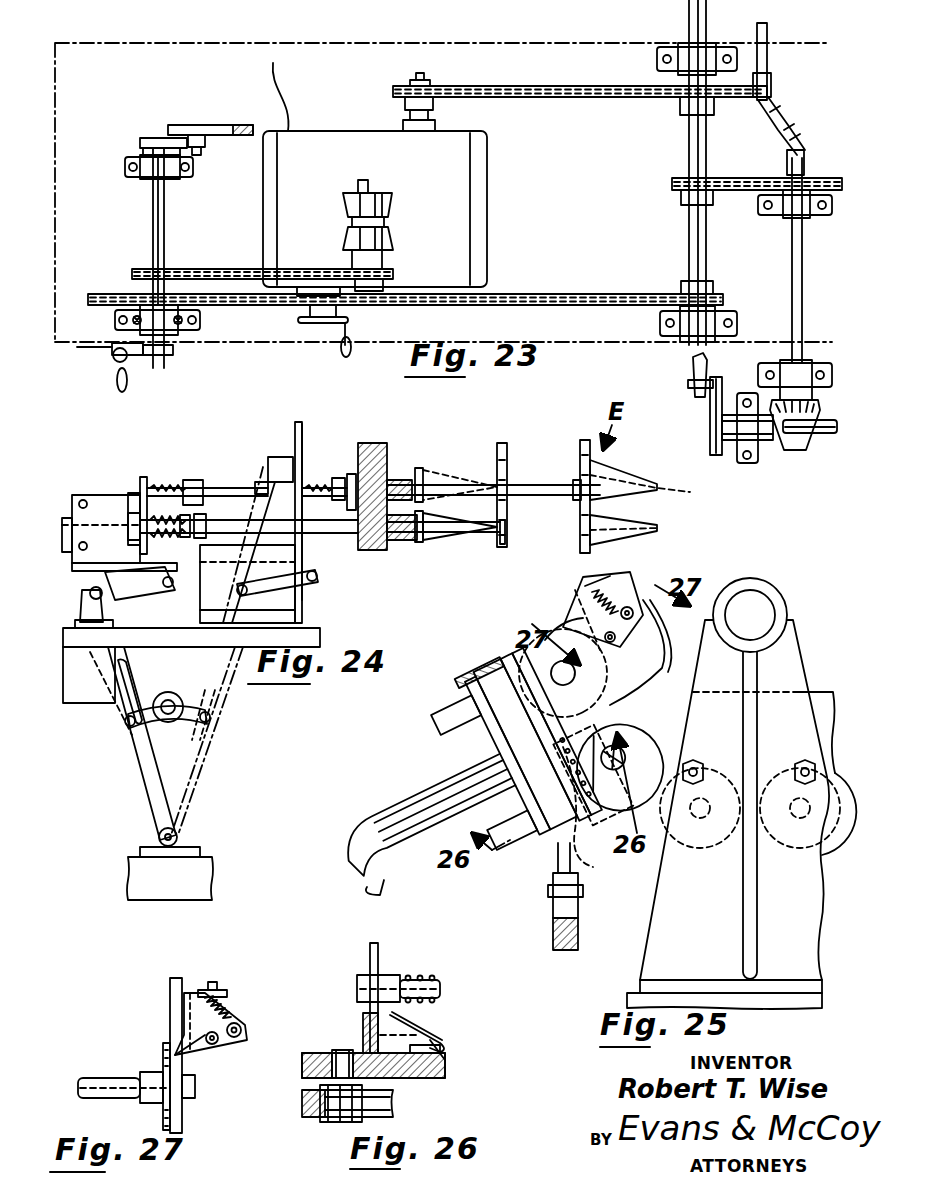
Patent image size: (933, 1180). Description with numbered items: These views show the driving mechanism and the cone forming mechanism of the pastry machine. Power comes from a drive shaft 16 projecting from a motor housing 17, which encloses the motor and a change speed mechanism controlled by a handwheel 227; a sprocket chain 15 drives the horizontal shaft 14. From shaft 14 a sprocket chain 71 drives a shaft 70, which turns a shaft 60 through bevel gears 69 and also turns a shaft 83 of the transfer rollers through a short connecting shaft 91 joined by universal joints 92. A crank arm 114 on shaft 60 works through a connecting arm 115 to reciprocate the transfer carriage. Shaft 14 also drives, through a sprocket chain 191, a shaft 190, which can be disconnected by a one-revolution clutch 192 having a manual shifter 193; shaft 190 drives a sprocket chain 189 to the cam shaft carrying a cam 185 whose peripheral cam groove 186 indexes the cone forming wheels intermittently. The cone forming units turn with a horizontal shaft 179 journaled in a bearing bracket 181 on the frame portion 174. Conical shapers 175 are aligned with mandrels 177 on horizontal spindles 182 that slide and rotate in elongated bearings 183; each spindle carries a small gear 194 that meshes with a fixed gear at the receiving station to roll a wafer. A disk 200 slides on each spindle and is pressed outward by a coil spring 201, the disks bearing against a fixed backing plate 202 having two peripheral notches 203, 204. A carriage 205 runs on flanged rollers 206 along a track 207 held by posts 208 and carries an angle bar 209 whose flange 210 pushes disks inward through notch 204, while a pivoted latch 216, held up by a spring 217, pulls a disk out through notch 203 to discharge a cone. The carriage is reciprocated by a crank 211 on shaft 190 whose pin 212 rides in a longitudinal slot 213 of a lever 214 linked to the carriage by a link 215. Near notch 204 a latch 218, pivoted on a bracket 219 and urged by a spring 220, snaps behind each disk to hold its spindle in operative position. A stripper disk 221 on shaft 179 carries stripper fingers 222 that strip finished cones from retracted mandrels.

In FIG. 23, the horizontal shaft 14 is at (688, 160).
In FIG. 23, the sprocket chain 15 is at (550, 86).
In FIG. 23, the drive shaft 16 is at (407, 112).
In FIG. 23, the motor housing 17 is at (345, 136).
In FIG. 23, the shaft 60 is at (818, 434).
In FIG. 23, the bevel gears 69 is at (788, 438).
In FIG. 23, the shaft 70 is at (803, 292).
In FIG. 23, the sprocket chain 71 is at (742, 191).
In FIG. 23, the shaft 83 is at (768, 28).
In FIG. 23, the connecting shaft 91 is at (784, 124).
In FIG. 23, the universal joints 92 is at (770, 80).
In FIG. 23, the crank arm 114 is at (710, 420).
In FIG. 23, the connecting arm 115 is at (690, 358).
In FIG. 23, the machine frame portion 174 is at (585, 342).
In FIG. 24, the machine frame portion 174 is at (320, 636).
In FIG. 25, the machine frame portion 174 is at (768, 1000).
In FIG. 24, the conical shapers 175 is at (640, 472).
In FIG. 24, the mandrels 177 is at (440, 470).
In FIG. 24, the horizontal shaft 179 is at (310, 470).
In FIG. 25, the horizontal shaft 179 is at (758, 608).
In FIG. 24, the bearing bracket 181 is at (286, 456).
In FIG. 25, the bearing bracket 181 is at (794, 650).
In FIG. 24, the spindles 182 is at (252, 490).
In FIG. 25, the spindles 182 is at (566, 678).
In FIG. 26, the spindles 182 is at (440, 980).
In FIG. 27, the spindles 182 is at (100, 1082).
In FIG. 24, the elongated bearings 183 is at (386, 455).
In FIG. 23, the cam 185 is at (346, 206).
In FIG. 23, the cam groove 186 is at (390, 222).
In FIG. 23, the sprocket chain 189 is at (222, 268).
In FIG. 23, the shaft 190 is at (152, 228).
In FIG. 24, the shaft 190 is at (166, 700).
In FIG. 23, the sprocket chain 191 is at (228, 308).
In FIG. 23, the clutch 192 is at (160, 352).
In FIG. 23, the shifter 193 is at (118, 377).
In FIG. 24, the small gear 194 is at (188, 482).
In FIG. 24, the disk 200 is at (140, 478).
In FIG. 25, the disk 200 is at (525, 650).
In FIG. 26, the disk 200 is at (378, 959).
In FIG. 27, the disk 200 is at (164, 1046).
In FIG. 24, the coil springs 201 is at (170, 546).
In FIG. 26, the coil springs 201 is at (430, 978).
In FIG. 24, the backing plate 202 is at (302, 424).
In FIG. 25, the backing plate 202 is at (670, 687).
In FIG. 27, the backing plate 202 is at (185, 1120).
In FIG. 25, the peripheral notch 203 is at (640, 732).
In FIG. 25, the peripheral notch 204 is at (610, 680).
In FIG. 24, the carriage 205 is at (88, 494).
In FIG. 25, the carriage 205 is at (470, 684).
In FIG. 26, the carriage 205 is at (445, 1078).
In FIG. 25, the flanged rollers 206 is at (437, 708).
In FIG. 26, the flanged rollers 206 is at (338, 1125).
In FIG. 24, the track 207 is at (60, 515).
In FIG. 25, the track 207 is at (468, 758).
In FIG. 26, the track 207 is at (305, 1100).
In FIG. 24, the posts 208 is at (87, 582).
In FIG. 25, the posts 208 is at (409, 800).
In FIG. 25, the angle bar 209 is at (473, 677).
In FIG. 26, the angle bar 209 is at (344, 1053).
In FIG. 24, the flange 210 is at (140, 514).
In FIG. 25, the flange 210 is at (613, 756).
In FIG. 26, the flange 210 is at (363, 1025).
In FIG. 23, the crank 211 is at (150, 138).
In FIG. 24, the crank 211 is at (210, 710).
In FIG. 23, the pin 212 is at (195, 128).
In FIG. 24, the pin 212 is at (212, 724).
In FIG. 24, the longitudinal slot 213 is at (130, 712).
In FIG. 23, the lever 214 is at (227, 125).
In FIG. 24, the lever 214 is at (200, 778).
In FIG. 24, the link 215 is at (140, 592).
In FIG. 25, the pivoted latch 216 is at (590, 820).
In FIG. 26, the pivoted latch 216 is at (414, 1022).
In FIG. 25, the spring 217 is at (556, 842).
In FIG. 26, the spring 217 is at (432, 1032).
In FIG. 25, the latch 218 is at (563, 633).
In FIG. 27, the latch 218 is at (206, 1050).
In FIG. 25, the bracket 219 is at (640, 625).
In FIG. 27, the bracket 219 is at (233, 1018).
In FIG. 25, the spring 220 is at (583, 585).
In FIG. 27, the spring 220 is at (218, 992).
In FIG. 24, the stripper disk 221 is at (507, 540).
In FIG. 24, the stripper fingers 222 is at (508, 478).
In FIG. 23, the handwheel 227 is at (321, 324).